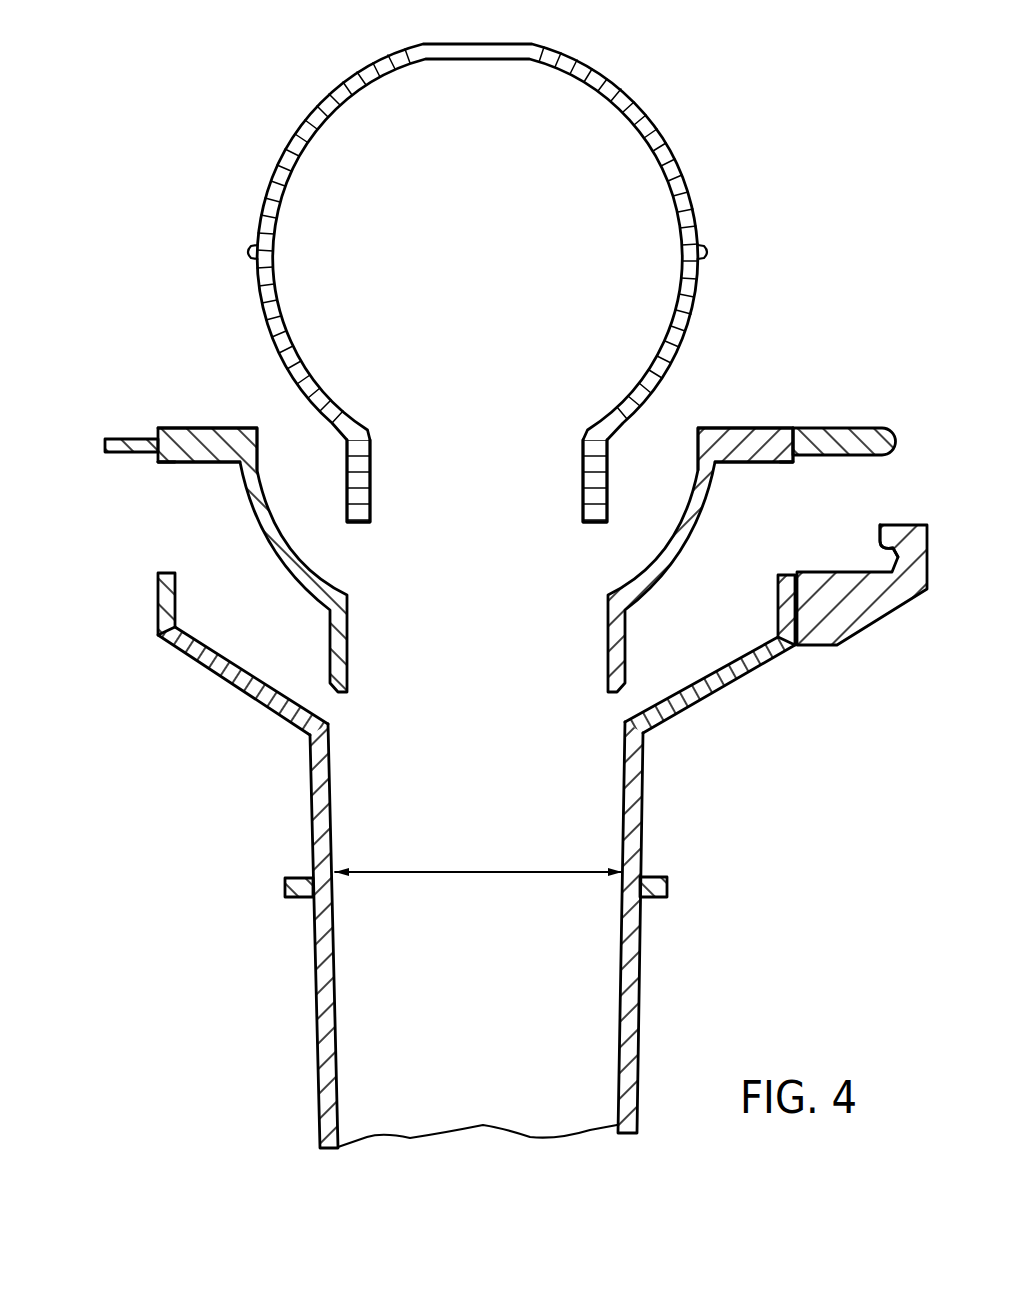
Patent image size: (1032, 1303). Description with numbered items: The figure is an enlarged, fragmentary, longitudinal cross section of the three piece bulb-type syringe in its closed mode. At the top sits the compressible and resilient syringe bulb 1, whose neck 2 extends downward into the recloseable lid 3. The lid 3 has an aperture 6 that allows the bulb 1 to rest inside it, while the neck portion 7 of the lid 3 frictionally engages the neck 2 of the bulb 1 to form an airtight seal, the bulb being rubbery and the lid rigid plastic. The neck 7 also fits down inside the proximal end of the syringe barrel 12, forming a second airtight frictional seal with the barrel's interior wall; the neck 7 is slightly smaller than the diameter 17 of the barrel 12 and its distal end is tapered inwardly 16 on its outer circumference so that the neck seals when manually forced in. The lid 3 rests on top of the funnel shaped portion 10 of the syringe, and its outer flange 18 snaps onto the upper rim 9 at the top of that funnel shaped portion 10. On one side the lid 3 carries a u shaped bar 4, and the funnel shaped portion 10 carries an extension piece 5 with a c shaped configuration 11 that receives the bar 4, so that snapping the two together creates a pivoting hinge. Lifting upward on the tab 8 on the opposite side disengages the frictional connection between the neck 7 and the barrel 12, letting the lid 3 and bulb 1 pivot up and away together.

The syringe bulb 1 is at (676, 152).
The neck of the bulb 2 is at (370, 487).
The recloseable lid 3 is at (207, 428).
The u shaped bar 4 is at (868, 428).
The extension piece 5 is at (870, 625).
The aperture 6 is at (312, 593).
The neck portion of the lid 7 is at (347, 637).
The tab 8 is at (105, 448).
The upper rim 9 is at (175, 576).
The funnel shaped portion 10 is at (245, 690).
The c shaped configuration 11 is at (880, 548).
The syringe barrel 12 is at (640, 945).
The inward taper 16 is at (608, 695).
The diameter of the barrel 17 is at (490, 872).
The outer flange 18 is at (175, 460).